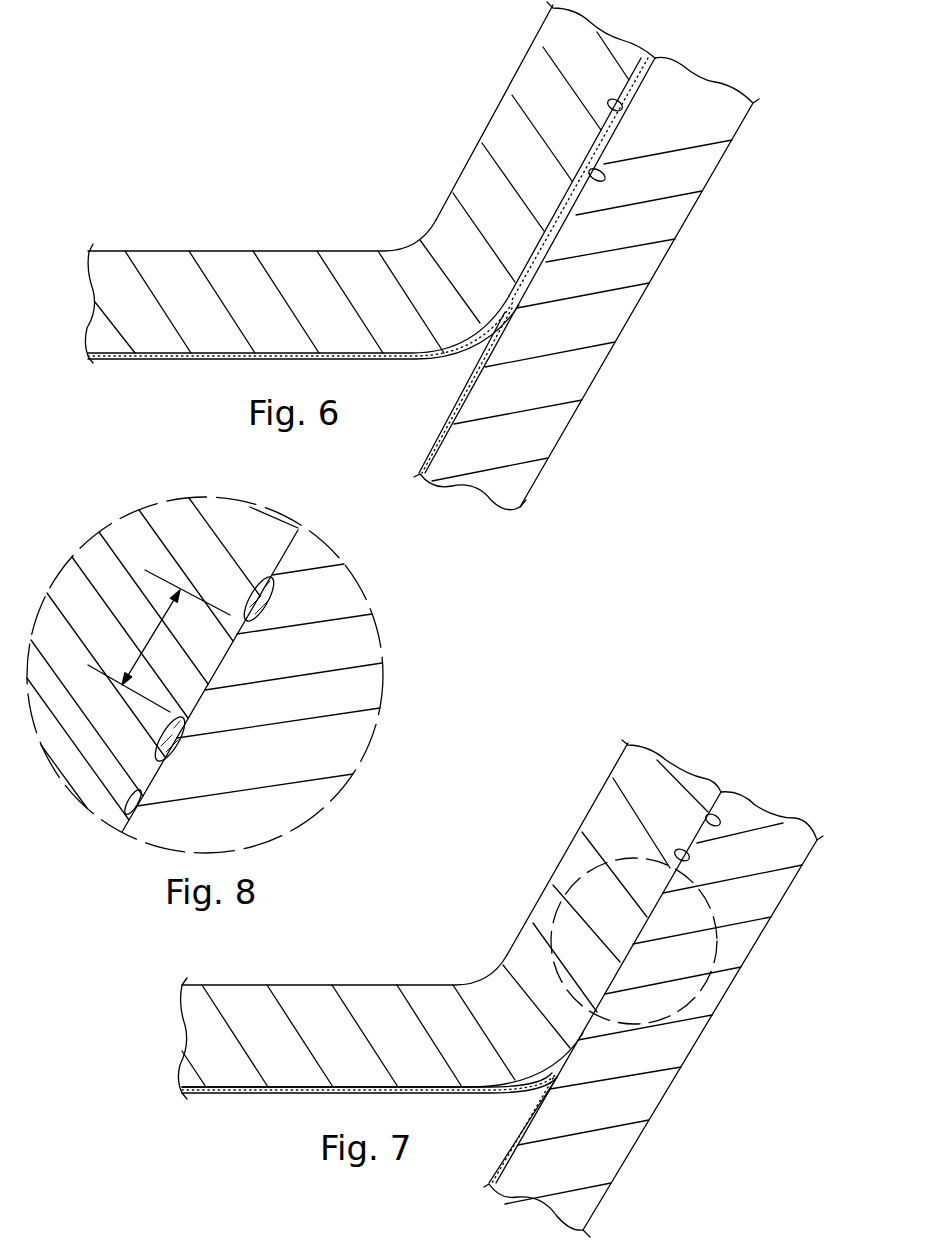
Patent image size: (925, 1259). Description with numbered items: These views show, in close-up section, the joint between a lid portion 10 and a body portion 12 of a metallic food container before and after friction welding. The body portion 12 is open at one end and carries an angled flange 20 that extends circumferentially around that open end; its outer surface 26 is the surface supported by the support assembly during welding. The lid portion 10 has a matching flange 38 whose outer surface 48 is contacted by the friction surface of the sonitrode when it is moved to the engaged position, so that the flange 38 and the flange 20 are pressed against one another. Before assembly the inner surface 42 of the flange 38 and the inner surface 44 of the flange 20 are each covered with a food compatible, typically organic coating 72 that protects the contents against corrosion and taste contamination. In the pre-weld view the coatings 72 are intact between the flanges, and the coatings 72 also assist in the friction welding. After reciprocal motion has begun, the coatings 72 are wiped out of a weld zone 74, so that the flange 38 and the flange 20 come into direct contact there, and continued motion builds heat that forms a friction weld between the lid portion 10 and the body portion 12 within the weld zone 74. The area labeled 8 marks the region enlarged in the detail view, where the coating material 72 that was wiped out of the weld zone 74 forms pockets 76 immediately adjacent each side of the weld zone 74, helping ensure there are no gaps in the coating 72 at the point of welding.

In FIG. 7, the enlarged area indicator 8 is at (558, 855).
In FIG. 6, the lid portion 10 is at (233, 273).
In FIG. 7, the lid portion 10 is at (300, 998).
In FIG. 6, the body portion 12 is at (535, 393).
In FIG. 7, the body portion 12 is at (603, 1147).
In FIG. 6, the flange 20 is at (647, 193).
In FIG. 8, the flange 20 is at (323, 695).
In FIG. 7, the flange 20 is at (783, 845).
In FIG. 6, the outer surface 26 is at (673, 242).
In FIG. 7, the outer surface 26 is at (705, 1020).
In FIG. 6, the flange 38 is at (563, 47).
In FIG. 8, the flange 38 is at (170, 523).
In FIG. 7, the flange 38 is at (622, 817).
In FIG. 6, the inner surface 42 is at (590, 160).
In FIG. 7, the inner surface 42 is at (707, 820).
In FIG. 6, the inner surface 44 is at (637, 102).
In FIG. 7, the inner surface 44 is at (687, 860).
In FIG. 6, the outer surface 48 is at (517, 77).
In FIG. 7, the outer surface 48 is at (547, 893).
In FIG. 6, the coating 72 is at (160, 359).
In FIG. 7, the coating 72 is at (243, 1095).
In FIG. 8, the weld zone 74 is at (153, 633).
In FIG. 8, the pockets 76 is at (277, 577).